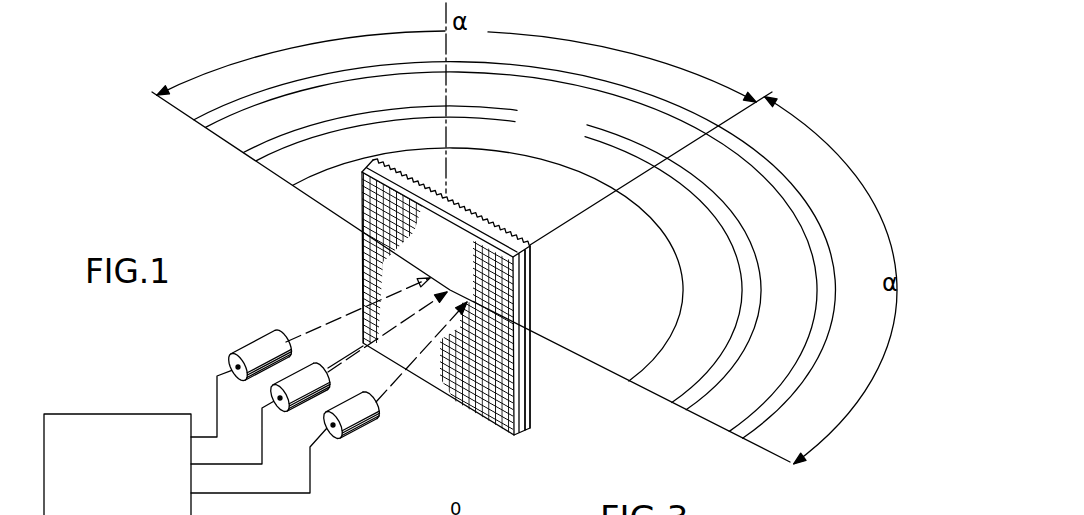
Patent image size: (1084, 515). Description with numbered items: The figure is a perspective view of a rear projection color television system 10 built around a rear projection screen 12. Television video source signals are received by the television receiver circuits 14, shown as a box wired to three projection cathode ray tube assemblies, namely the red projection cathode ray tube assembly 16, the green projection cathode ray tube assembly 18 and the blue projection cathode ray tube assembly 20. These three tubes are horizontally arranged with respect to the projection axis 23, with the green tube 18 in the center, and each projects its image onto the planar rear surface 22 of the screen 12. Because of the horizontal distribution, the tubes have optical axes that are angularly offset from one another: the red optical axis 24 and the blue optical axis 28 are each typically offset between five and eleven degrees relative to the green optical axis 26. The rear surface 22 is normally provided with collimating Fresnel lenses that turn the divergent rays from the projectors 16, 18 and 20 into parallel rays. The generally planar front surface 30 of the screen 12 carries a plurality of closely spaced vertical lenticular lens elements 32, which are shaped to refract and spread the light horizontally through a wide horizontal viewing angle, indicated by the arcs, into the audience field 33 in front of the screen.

The rear projection color television system 10 is at (203, 298).
The rear projection screen 12 is at (466, 304).
The television receiver circuits 14 is at (150, 412).
The red projection cathode ray tube assembly 16 is at (258, 352).
The green projection cathode ray tube assembly 18 is at (304, 407).
The blue projection cathode ray tube assembly 20 is at (353, 430).
The rear surface 22 is at (474, 392).
The projection axis 23 is at (548, 228).
The red optical axis 24 is at (350, 310).
The green optical axis 26 is at (369, 348).
The blue optical axis 28 is at (394, 370).
The front surface 30 is at (530, 392).
The lenticular lens elements 32 is at (462, 208).
The audience field 33 is at (567, 127).